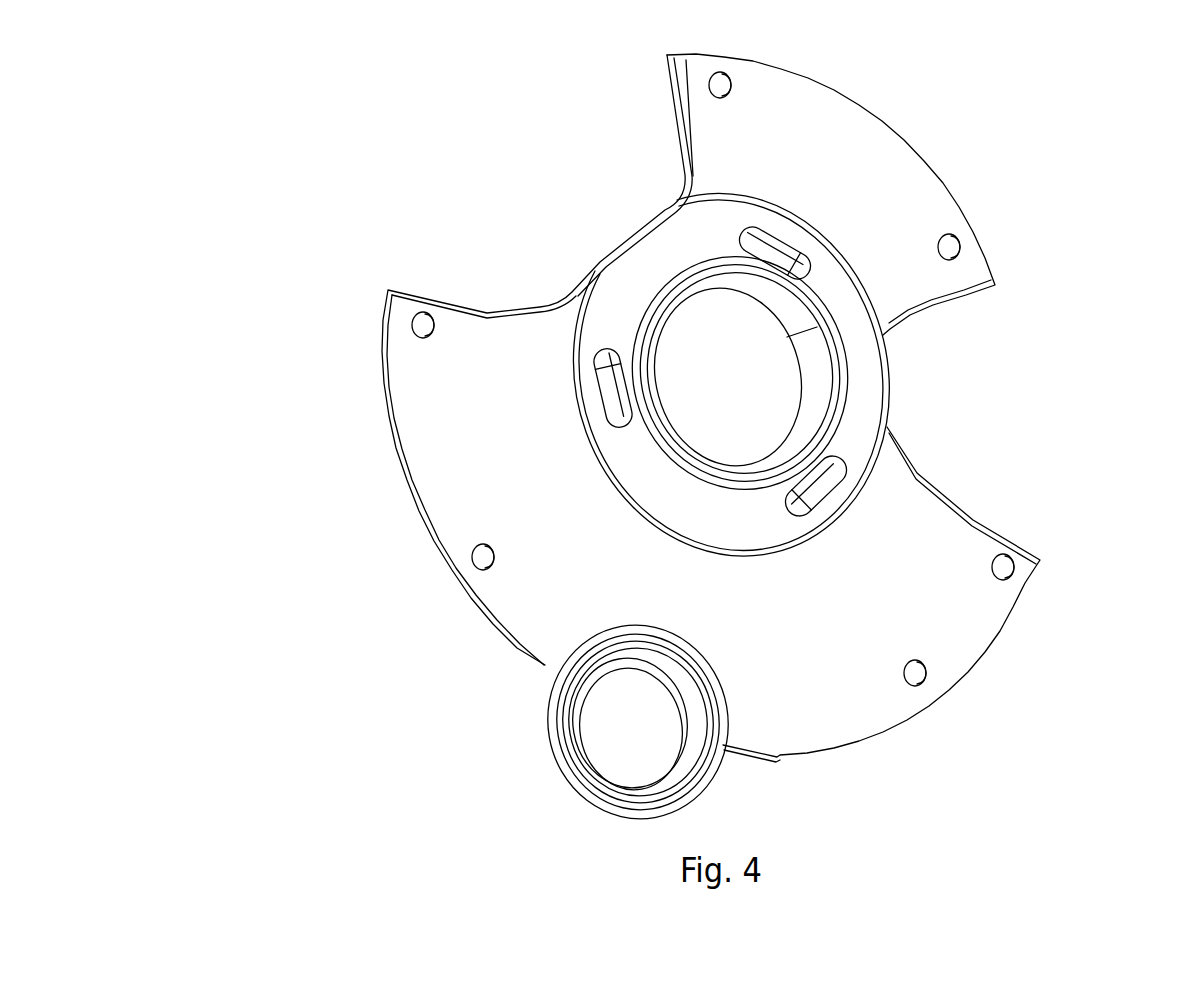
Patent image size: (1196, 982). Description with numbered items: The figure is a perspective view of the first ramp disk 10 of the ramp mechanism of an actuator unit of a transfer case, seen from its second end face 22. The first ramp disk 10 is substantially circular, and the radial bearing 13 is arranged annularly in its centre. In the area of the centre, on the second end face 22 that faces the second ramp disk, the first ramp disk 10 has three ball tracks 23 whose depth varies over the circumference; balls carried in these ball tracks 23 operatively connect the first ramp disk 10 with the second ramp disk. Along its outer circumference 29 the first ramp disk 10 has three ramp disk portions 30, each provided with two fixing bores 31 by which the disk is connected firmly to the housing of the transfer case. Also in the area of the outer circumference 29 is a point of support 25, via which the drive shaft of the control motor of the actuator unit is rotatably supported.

The first ramp disk 10 is at (983, 132).
The radial bearing 13 is at (820, 394).
The second end face 22 is at (780, 112).
The ball tracks 23 is at (820, 490).
The point of support 25 is at (580, 689).
The outer circumference 29 is at (978, 654).
The ramp disk portions 30 is at (452, 490).
The fixing bores 31 is at (423, 326).